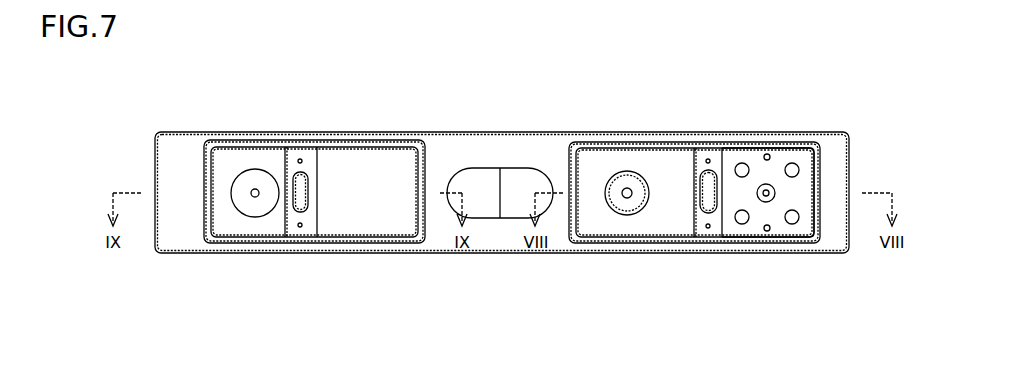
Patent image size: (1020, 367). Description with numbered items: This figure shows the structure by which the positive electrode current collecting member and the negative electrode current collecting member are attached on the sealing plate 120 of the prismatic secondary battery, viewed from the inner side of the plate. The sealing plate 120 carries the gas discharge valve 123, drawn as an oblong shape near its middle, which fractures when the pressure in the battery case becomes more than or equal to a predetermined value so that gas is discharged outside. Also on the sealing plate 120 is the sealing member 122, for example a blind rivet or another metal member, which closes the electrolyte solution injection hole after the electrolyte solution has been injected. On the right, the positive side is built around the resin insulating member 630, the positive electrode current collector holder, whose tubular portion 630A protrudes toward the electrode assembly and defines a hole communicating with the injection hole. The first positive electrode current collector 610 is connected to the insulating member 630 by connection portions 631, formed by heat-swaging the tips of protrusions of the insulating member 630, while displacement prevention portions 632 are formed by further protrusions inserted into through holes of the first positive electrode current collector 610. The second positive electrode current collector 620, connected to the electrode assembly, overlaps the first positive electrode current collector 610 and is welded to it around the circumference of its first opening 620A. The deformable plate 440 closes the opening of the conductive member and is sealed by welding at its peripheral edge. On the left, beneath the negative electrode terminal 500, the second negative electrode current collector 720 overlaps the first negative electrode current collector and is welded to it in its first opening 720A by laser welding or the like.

The sealing plate 120 is at (436, 133).
The sealing member 122 is at (627, 188).
The gas discharge valve 123 is at (522, 178).
The negative electrode terminal 500 is at (256, 168).
The second negative electrode current collector 720 is at (314, 194).
The first opening 720A is at (302, 213).
The second positive electrode current collector 620 is at (688, 208).
The first opening 620A is at (700, 192).
The insulating member 630 is at (580, 245).
The tubular portion 630A is at (629, 214).
The connection portion 631 is at (739, 164).
The displacement prevention portion 632 is at (766, 153).
The first positive electrode current collector 610 is at (806, 192).
The deformable plate 440 is at (775, 197).